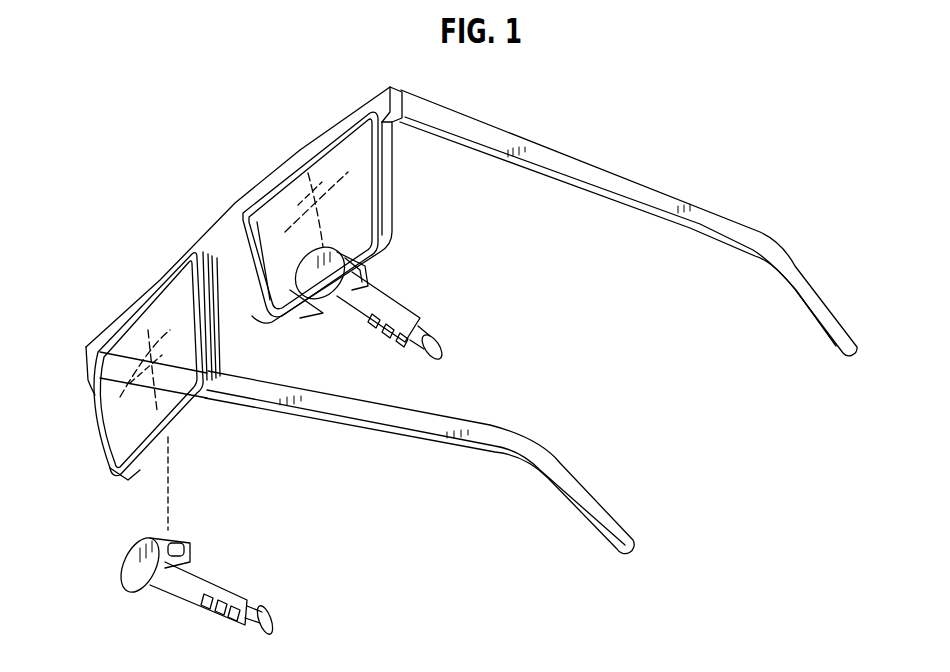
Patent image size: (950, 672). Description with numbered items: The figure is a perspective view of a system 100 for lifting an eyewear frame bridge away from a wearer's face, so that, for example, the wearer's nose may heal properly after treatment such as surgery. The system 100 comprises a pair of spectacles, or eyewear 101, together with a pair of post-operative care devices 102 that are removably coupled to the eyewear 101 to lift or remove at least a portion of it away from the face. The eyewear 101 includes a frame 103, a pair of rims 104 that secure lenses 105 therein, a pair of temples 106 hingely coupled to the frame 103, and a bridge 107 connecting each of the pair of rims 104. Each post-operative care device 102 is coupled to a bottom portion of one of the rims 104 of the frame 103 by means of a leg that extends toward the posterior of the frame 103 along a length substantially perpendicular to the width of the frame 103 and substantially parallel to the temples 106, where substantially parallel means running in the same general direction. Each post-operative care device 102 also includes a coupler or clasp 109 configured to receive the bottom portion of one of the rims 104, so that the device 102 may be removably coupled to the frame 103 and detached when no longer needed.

The system 100 is at (769, 151).
The eyewear 101 is at (180, 214).
The post-operative care device 102 is at (405, 298).
The frame 103 is at (130, 297).
The rim 104 is at (138, 455).
The lens 105 is at (120, 360).
The temple 106 is at (610, 195).
The bridge 107 is at (223, 225).
The clasp 109 is at (340, 158).